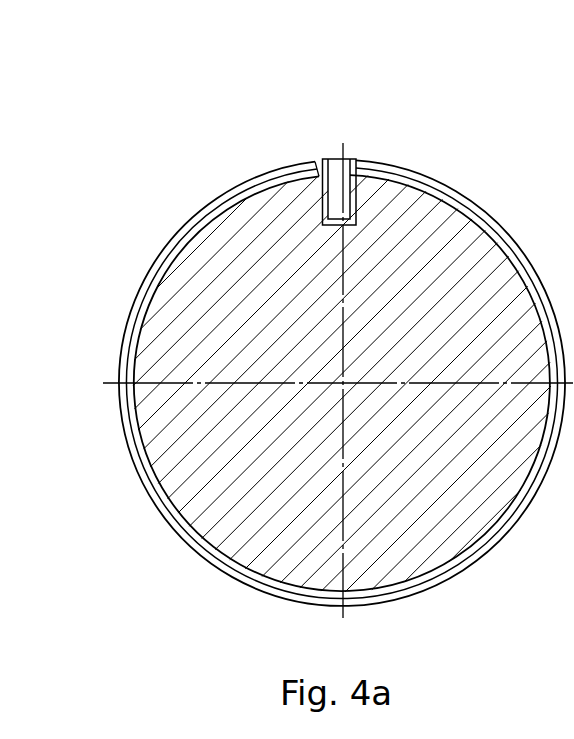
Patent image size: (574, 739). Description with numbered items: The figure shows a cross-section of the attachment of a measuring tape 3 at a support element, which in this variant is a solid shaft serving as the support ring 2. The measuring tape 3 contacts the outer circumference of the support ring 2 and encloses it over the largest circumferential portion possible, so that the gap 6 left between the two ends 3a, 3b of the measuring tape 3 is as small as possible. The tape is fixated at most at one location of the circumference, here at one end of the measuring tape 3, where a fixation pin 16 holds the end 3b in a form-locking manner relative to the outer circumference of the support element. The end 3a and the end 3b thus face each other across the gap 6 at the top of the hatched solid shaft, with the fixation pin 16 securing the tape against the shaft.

The support ring 2 is at (230, 205).
The measuring tape 3 is at (153, 257).
The end of the measuring tape 3a is at (311, 163).
The end of the measuring tape 3b is at (320, 158).
The gap 6 is at (314, 157).
The fixation pin 16 is at (343, 158).